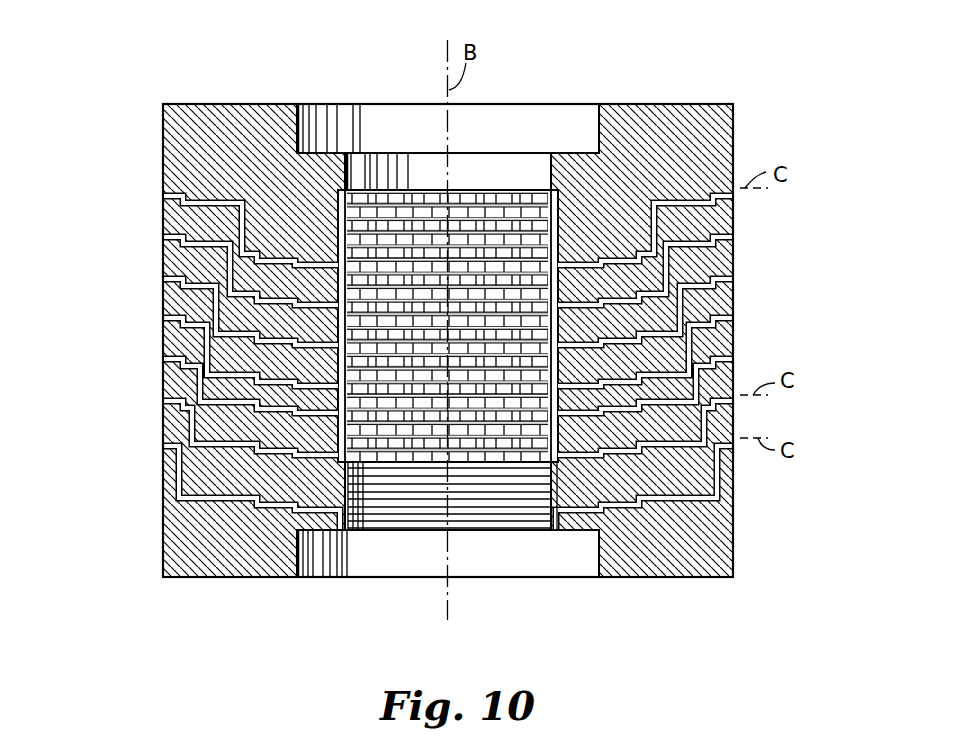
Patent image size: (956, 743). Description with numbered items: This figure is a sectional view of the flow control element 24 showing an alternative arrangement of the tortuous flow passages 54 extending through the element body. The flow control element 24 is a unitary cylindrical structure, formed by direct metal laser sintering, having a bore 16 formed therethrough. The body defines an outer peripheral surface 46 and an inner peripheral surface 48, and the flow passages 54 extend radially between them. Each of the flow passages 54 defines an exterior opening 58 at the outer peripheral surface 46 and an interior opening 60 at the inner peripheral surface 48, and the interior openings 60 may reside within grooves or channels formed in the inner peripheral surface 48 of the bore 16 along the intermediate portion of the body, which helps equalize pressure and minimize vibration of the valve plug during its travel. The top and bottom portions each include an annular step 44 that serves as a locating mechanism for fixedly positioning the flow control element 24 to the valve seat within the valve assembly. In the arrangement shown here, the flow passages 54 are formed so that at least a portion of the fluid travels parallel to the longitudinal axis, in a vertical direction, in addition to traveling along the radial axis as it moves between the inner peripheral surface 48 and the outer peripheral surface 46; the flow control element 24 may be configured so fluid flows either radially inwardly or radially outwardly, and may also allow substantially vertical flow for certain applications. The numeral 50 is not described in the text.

The flow control element 24 is at (727, 68).
The outer peripheral surface 46 is at (734, 147).
The bore 16 is at (357, 155).
The inner peripheral surface 48 is at (532, 158).
The annular step 44 is at (598, 143).
The interior opening 60 is at (338, 292).
The tortuous flow passages 54 is at (734, 330).
The exterior opening 58 is at (164, 444).
The threaded portion 50 is at (362, 480).